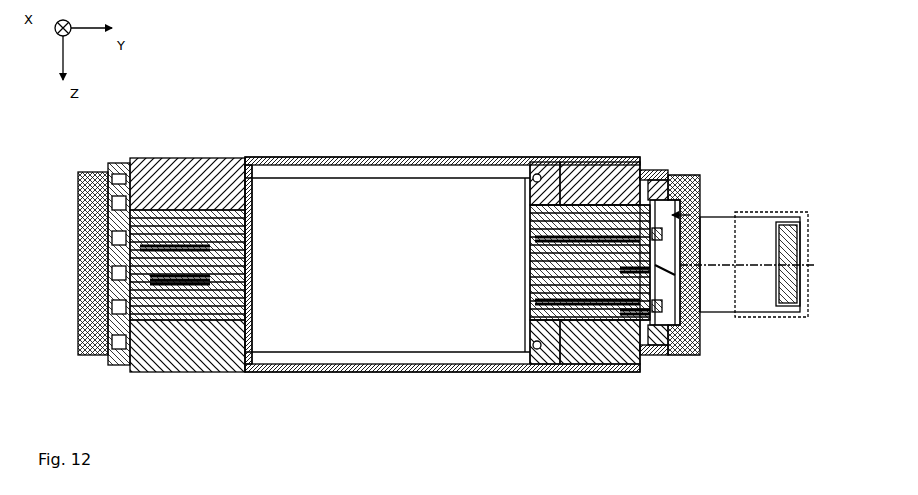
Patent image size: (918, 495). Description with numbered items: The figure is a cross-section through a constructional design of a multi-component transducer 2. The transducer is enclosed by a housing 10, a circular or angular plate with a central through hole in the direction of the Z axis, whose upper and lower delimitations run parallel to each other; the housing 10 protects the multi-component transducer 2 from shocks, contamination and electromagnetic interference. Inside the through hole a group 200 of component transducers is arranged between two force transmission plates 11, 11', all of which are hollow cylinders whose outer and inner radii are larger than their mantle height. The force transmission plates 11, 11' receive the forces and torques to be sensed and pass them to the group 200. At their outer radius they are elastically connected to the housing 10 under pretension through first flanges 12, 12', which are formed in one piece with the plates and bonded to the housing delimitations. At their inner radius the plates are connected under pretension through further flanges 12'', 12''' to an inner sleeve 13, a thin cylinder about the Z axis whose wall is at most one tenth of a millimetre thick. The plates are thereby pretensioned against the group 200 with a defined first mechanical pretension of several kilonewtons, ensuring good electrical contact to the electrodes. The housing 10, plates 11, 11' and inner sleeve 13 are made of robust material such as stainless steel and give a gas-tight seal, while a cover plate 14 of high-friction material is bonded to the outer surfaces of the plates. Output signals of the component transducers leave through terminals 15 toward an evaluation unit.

The multi-component transducer 2 is at (390, 126).
The housing 10 is at (700, 179).
The force transmission plate 11 is at (588, 143).
The force transmission plate 11' is at (600, 381).
The first flange 12 is at (652, 133).
The first flange 12' is at (676, 391).
The further flange 12'' is at (527, 137).
The further flange 12''' is at (551, 387).
The inner sleeve 13 is at (528, 227).
The cover plate 14 is at (609, 160).
The terminals 15 is at (745, 297).
The group of component transducers 200 is at (700, 190).